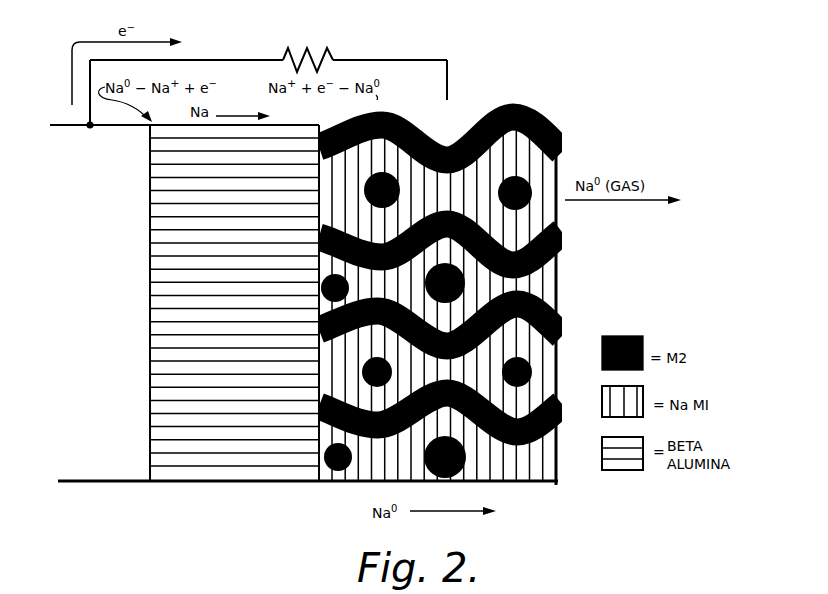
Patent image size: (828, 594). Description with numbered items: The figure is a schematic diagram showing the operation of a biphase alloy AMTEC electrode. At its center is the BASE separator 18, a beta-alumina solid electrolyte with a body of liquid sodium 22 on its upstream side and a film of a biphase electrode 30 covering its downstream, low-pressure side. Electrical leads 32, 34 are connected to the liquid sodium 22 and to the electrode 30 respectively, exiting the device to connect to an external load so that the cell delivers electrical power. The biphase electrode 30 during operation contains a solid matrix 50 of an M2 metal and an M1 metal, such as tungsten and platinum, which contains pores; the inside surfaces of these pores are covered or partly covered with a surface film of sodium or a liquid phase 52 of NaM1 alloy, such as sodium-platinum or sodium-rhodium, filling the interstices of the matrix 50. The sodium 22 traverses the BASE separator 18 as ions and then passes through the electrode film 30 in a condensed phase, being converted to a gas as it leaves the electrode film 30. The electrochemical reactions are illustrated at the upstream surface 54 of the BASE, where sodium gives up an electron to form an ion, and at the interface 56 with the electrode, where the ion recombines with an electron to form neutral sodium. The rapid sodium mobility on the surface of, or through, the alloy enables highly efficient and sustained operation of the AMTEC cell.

The BASE separator 18 is at (248, 435).
The liquid sodium 22 is at (305, 48).
The biphase electrode 30 is at (475, 284).
The electrical lead 32 is at (88, 91).
The electrical lead 34 is at (449, 80).
The solid matrix 50 is at (552, 116).
The liquid phase 52 is at (557, 211).
The upstream surface 54 is at (150, 388).
The interface 56 is at (318, 173).